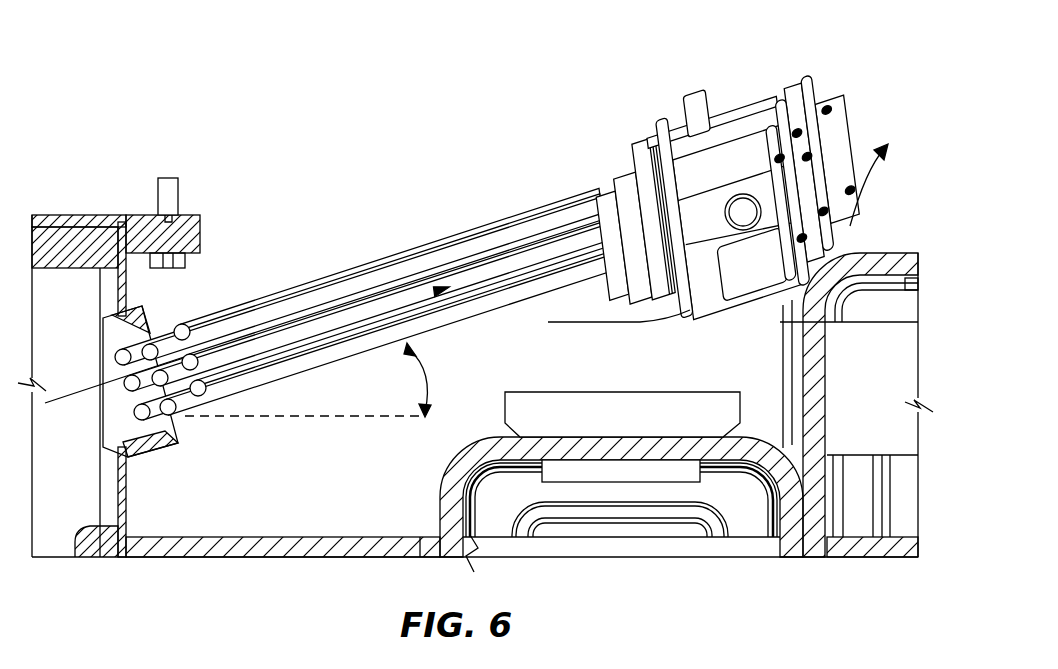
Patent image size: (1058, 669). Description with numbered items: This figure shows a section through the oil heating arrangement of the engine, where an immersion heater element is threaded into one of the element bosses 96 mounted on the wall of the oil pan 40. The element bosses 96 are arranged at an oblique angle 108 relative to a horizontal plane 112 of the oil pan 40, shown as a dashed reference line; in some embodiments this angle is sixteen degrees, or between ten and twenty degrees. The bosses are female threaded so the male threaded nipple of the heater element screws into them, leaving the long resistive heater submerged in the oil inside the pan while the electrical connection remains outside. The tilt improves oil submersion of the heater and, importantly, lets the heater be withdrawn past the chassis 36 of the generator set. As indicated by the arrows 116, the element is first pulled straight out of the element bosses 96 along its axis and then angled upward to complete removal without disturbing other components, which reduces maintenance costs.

The chassis 36 is at (862, 264).
The oil pan 40 is at (119, 237).
The element boss 96 is at (157, 436).
The oblique angle 108 is at (420, 378).
The horizontal plane 112 is at (350, 418).
The arrows 116 is at (328, 320).